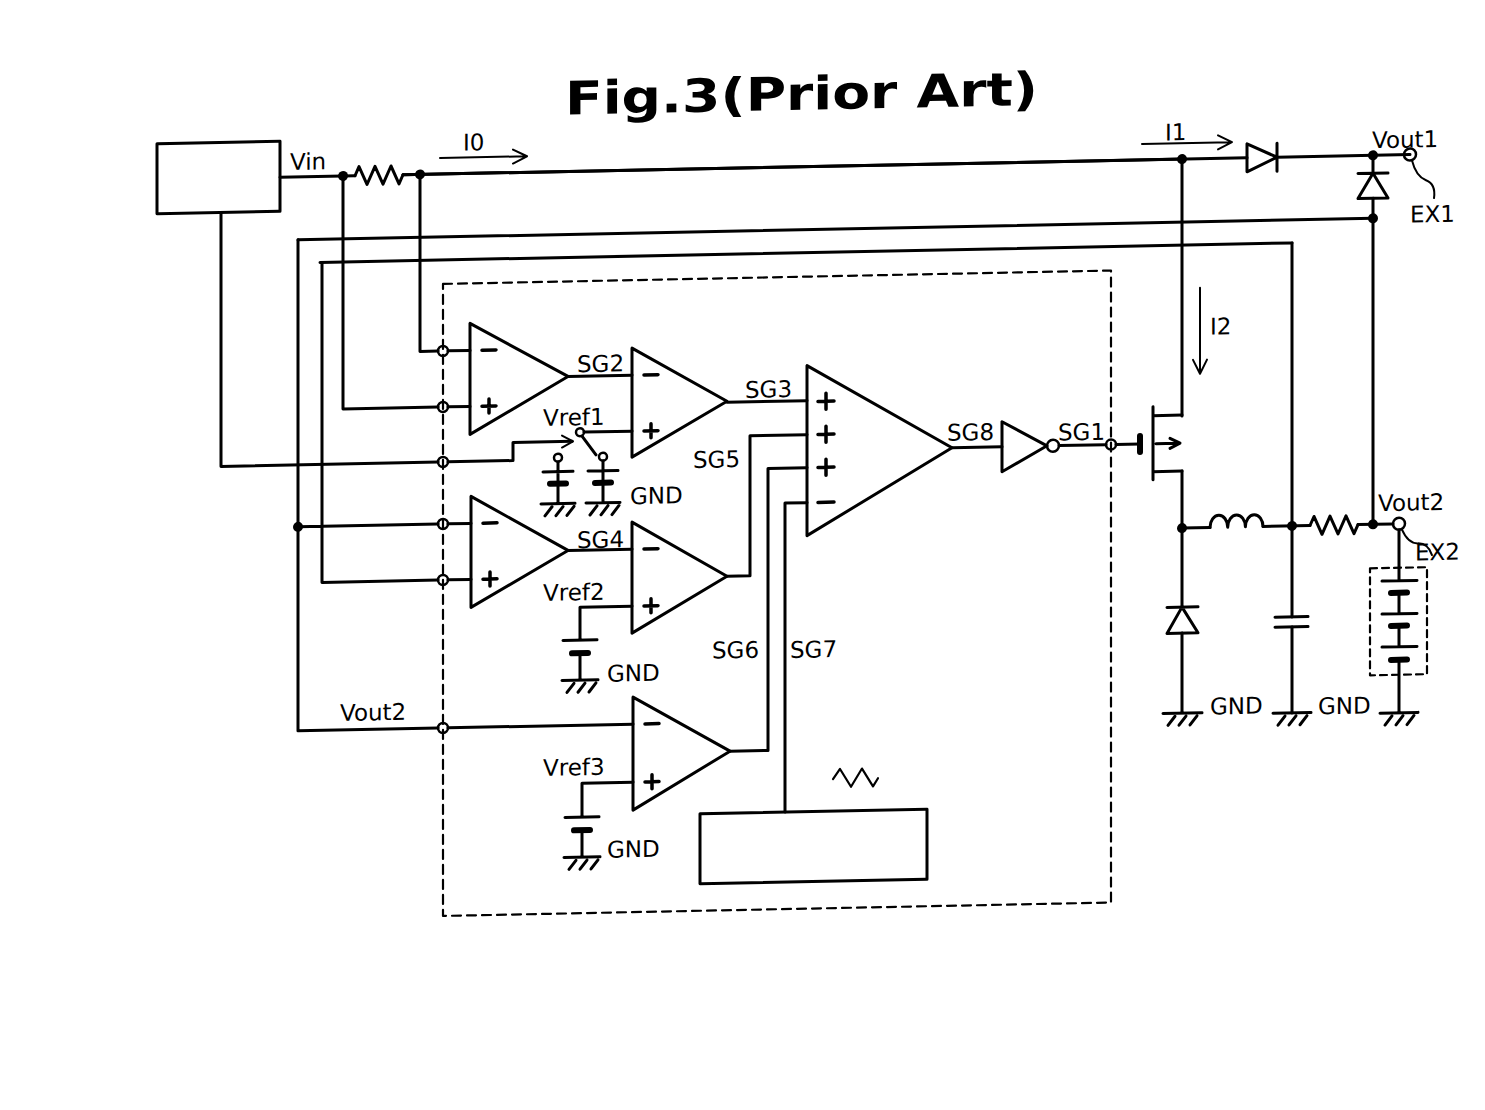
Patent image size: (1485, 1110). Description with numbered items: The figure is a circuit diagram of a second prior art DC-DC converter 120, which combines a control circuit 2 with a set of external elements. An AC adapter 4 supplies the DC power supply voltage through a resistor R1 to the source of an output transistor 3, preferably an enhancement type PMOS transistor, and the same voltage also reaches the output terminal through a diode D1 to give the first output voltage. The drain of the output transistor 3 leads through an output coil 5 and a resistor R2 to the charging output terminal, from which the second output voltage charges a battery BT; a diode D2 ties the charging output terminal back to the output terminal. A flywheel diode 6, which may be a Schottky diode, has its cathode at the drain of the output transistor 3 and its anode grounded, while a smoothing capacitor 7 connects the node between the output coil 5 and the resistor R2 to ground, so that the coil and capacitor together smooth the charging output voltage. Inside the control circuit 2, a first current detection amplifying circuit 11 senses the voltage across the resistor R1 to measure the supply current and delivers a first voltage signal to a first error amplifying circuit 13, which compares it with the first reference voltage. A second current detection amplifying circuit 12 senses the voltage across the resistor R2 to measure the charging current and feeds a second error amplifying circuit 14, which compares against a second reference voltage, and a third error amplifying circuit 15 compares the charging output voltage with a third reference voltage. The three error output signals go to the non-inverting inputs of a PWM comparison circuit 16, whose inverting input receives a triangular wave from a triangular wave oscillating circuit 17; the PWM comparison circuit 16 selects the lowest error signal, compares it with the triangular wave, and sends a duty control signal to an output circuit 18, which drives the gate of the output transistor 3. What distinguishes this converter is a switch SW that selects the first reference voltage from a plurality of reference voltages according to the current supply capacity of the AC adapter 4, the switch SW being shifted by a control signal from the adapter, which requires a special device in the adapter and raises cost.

The DC-DC converter 120 is at (1085, 136).
The control circuit 2 is at (1111, 864).
The output transistor 3 is at (1152, 428).
The AC adapter 4 is at (255, 132).
The output coil 5 is at (1241, 525).
The flywheel diode 6 is at (1198, 628).
The smoothing capacitor 7 is at (1300, 636).
The first current detection amplifying circuit 11 is at (505, 340).
The second current detection amplifying circuit 12 is at (515, 583).
The first error amplifying circuit 13 is at (680, 370).
The second error amplifying circuit 14 is at (683, 545).
The third error amplifying circuit 15 is at (683, 719).
The PWM comparison circuit 16 is at (885, 408).
The triangular wave oscillating circuit 17 is at (927, 836).
The output circuit 18 is at (1020, 431).
The resistor R1 is at (380, 158).
The resistor R2 is at (1332, 532).
The diode D1 is at (1262, 162).
The diode D2 is at (1358, 197).
The switch SW is at (608, 448).
The battery BT is at (1418, 690).